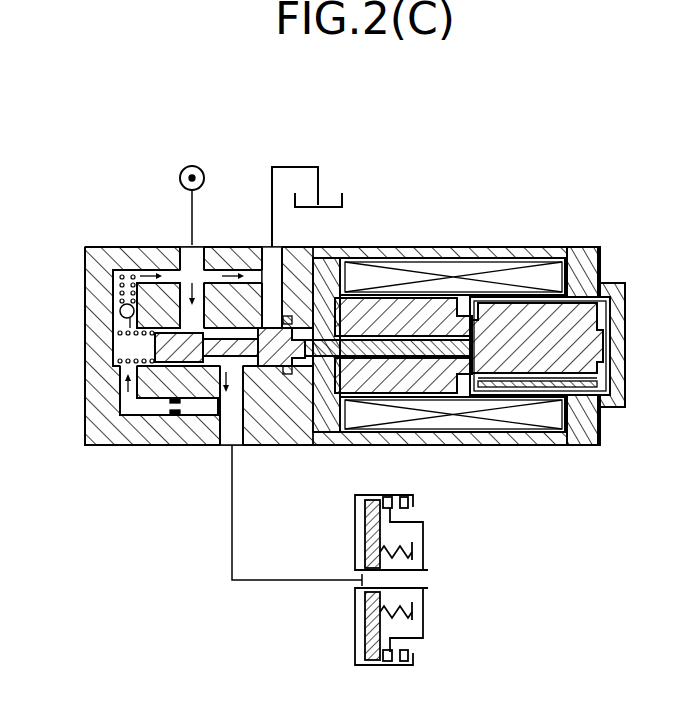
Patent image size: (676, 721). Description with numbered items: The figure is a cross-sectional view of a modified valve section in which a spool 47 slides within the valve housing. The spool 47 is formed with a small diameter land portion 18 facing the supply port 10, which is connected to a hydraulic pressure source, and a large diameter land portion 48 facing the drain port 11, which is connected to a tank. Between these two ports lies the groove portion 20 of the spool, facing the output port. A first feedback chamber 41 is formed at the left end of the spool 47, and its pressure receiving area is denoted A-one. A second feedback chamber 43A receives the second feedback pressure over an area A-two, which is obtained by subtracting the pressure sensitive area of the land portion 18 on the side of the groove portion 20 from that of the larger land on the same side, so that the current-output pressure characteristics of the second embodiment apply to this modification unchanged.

The supply port 10 is at (186, 257).
The large diameter land portion 48 is at (242, 332).
The drain port 11 is at (269, 258).
The first feedback chamber 41 is at (113, 350).
The small diameter land portion 18 is at (188, 362).
The groove portion 20 is at (213, 366).
The second feedback chamber 43A is at (237, 342).
The spool 47 is at (280, 366).